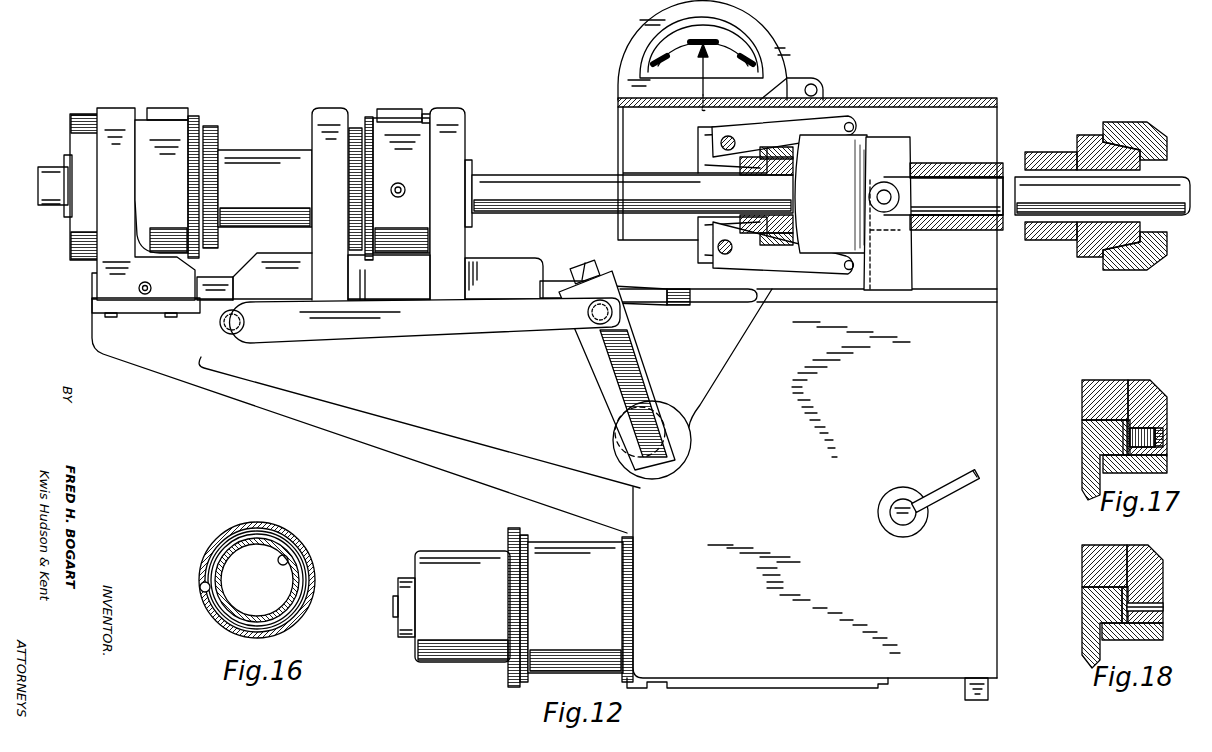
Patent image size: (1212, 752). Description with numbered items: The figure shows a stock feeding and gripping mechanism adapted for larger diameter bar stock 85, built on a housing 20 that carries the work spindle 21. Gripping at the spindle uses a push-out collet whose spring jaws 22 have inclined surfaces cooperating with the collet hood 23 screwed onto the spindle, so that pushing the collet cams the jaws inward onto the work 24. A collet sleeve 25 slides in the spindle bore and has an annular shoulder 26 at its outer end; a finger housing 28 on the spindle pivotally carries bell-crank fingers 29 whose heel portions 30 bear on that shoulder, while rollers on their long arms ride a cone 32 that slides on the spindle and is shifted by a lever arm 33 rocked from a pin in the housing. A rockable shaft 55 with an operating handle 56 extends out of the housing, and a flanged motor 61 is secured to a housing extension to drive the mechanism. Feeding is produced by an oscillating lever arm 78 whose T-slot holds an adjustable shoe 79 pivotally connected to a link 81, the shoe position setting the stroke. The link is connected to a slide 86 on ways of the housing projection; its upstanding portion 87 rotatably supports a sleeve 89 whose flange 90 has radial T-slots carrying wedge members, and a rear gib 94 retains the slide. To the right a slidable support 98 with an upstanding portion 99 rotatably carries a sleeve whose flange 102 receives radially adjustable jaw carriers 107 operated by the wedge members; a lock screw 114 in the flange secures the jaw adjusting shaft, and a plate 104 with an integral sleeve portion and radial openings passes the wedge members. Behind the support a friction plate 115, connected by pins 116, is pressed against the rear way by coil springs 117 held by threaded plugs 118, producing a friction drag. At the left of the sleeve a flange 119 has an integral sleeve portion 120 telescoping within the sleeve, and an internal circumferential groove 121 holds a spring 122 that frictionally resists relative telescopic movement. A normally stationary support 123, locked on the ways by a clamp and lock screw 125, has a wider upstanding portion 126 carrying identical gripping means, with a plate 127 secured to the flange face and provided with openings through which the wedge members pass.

In FIG. 12, the housing 20 is at (997, 404).
In FIG. 17, the housing 20 is at (1090, 446).
In FIG. 18, the housing 20 is at (1090, 612).
In FIG. 12, the work spindle 21 is at (950, 165).
In FIG. 12, the spring jaws 22 is at (1152, 138).
In FIG. 12, the collet hood 23 is at (1125, 122).
In FIG. 12, the work 24 is at (1165, 190).
In FIG. 12, the collet sleeve 25 is at (955, 232).
In FIG. 12, the annular shoulder 26 is at (752, 176).
In FIG. 12, the finger housing 28 is at (700, 145).
In FIG. 12, the fingers 29 is at (817, 120).
In FIG. 12, the heel portions 30 is at (735, 175).
In FIG. 12, the cone 32 is at (831, 194).
In FIG. 12, the lever arm 33 is at (905, 270).
In FIG. 12, the rockable shaft 55 is at (910, 528).
In FIG. 12, the operating handle 56 is at (945, 487).
In FIG. 12, the flanged motor 61 is at (513, 607).
In FIG. 12, the lever arm 78 is at (644, 368).
In FIG. 12, the shoe 79 is at (598, 330).
In FIG. 12, the link 81 is at (512, 330).
In FIG. 12, the bar stock 85 is at (548, 175).
In FIG. 12, the slide 86 is at (255, 258).
In FIG. 12, the upstanding portion 87 is at (332, 108).
In FIG. 12, the sleeve 89 is at (262, 150).
In FIG. 16, the sleeve 89 is at (272, 538).
In FIG. 12, the outstanding flange 90 is at (355, 128).
In FIG. 17, the rear gib 94 is at (1168, 462).
In FIG. 18, the rear gib 94 is at (1164, 631).
In FIG. 12, the slidable support 98 is at (470, 262).
In FIG. 17, the slidable support 98 is at (1125, 385).
In FIG. 18, the slidable support 98 is at (1120, 557).
In FIG. 12, the upstanding portion 99 is at (452, 108).
In FIG. 12, the outstanding flange 102 is at (427, 114).
In FIG. 12, the plate 104 is at (370, 117).
In FIG. 12, the jaw carriers 107 is at (168, 108).
In FIG. 12, the lock screw 114 is at (400, 183).
In FIG. 17, the friction plate 115 is at (1162, 398).
In FIG. 18, the friction plate 115 is at (1152, 565).
In FIG. 18, the pins 116 is at (1165, 604).
In FIG. 17, the coil springs 117 is at (1158, 428).
In FIG. 17, the threaded plugs 118 is at (1162, 436).
In FIG. 12, the flange 119 is at (212, 126).
In FIG. 16, the sleeve portion 120 is at (308, 560).
In FIG. 16, the circumferential groove 121 is at (205, 583).
In FIG. 16, the spring 122 is at (250, 542).
In FIG. 12, the stationary support 123 is at (174, 292).
In FIG. 12, the lock screw 125 is at (148, 287).
In FIG. 12, the upstanding portion 126 is at (110, 108).
In FIG. 12, the plate 127 is at (192, 116).